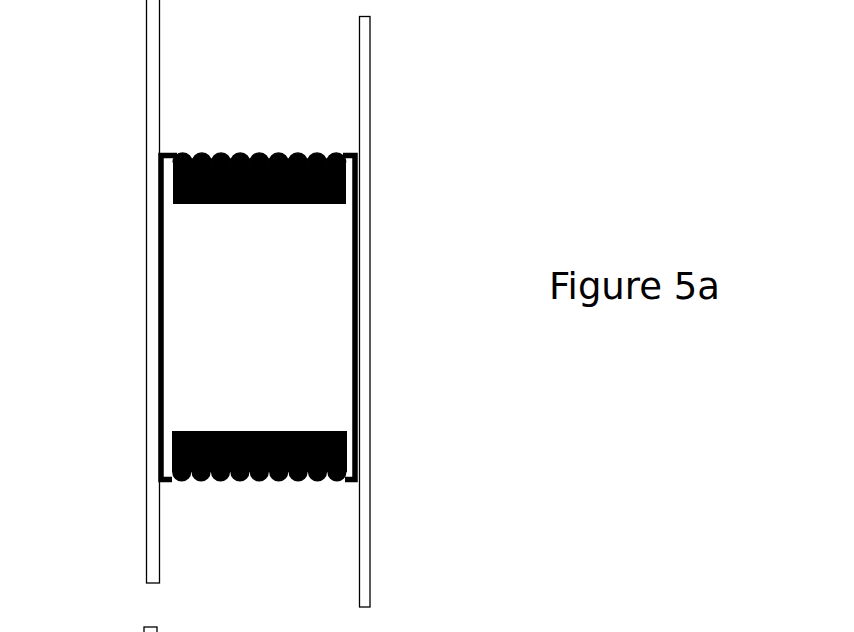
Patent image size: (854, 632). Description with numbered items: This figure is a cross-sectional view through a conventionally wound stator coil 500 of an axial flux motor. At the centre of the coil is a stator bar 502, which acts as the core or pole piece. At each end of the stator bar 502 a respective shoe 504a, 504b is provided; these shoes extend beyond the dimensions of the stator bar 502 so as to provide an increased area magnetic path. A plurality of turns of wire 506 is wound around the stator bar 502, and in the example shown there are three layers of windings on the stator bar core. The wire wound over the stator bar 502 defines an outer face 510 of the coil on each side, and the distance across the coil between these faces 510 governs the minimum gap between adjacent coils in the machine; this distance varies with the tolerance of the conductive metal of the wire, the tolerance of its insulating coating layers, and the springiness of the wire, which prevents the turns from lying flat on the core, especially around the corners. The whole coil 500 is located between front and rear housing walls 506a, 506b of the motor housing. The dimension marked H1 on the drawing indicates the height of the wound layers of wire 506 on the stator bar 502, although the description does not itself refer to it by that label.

The stator coil 500 is at (258, 548).
The stator bar 502 is at (280, 322).
The shoe 504a is at (165, 473).
The shoe 504b is at (352, 175).
The turns of wire 506 is at (213, 141).
The front housing wall 506a is at (157, 525).
The rear housing wall 506b is at (365, 530).
The outer face of the coil 510 is at (272, 154).
The bed height H1 is at (173, 204).